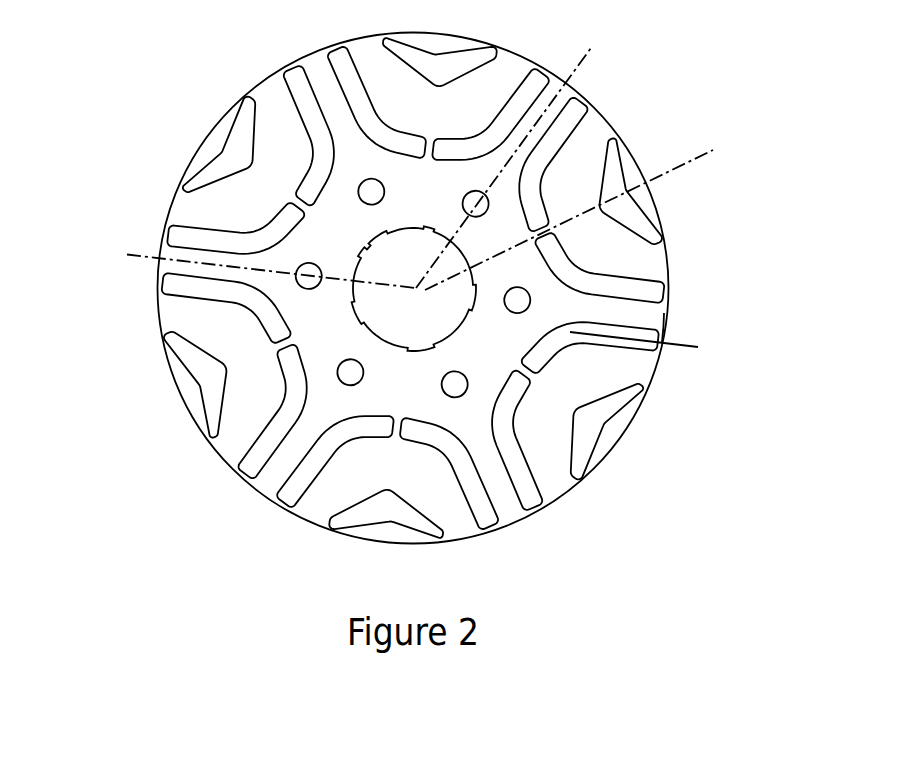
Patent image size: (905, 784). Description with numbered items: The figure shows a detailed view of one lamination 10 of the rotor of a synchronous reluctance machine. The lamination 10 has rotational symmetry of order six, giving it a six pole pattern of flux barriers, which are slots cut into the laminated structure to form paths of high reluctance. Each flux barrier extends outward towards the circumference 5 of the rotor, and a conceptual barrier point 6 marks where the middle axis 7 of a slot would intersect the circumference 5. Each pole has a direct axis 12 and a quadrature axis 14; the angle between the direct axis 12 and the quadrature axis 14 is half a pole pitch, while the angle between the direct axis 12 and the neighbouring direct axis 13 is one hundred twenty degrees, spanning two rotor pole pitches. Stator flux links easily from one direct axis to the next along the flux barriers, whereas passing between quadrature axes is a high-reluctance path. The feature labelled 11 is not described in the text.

The circumference 5 is at (176, 385).
The barrier point 6 is at (660, 342).
The middle axis 7 is at (698, 347).
The lamination 10 is at (318, 413).
The rim bridge 11 is at (667, 327).
The direct axis 12 is at (580, 68).
The direct axis 13 is at (141, 256).
The quadrature axis 14 is at (683, 165).